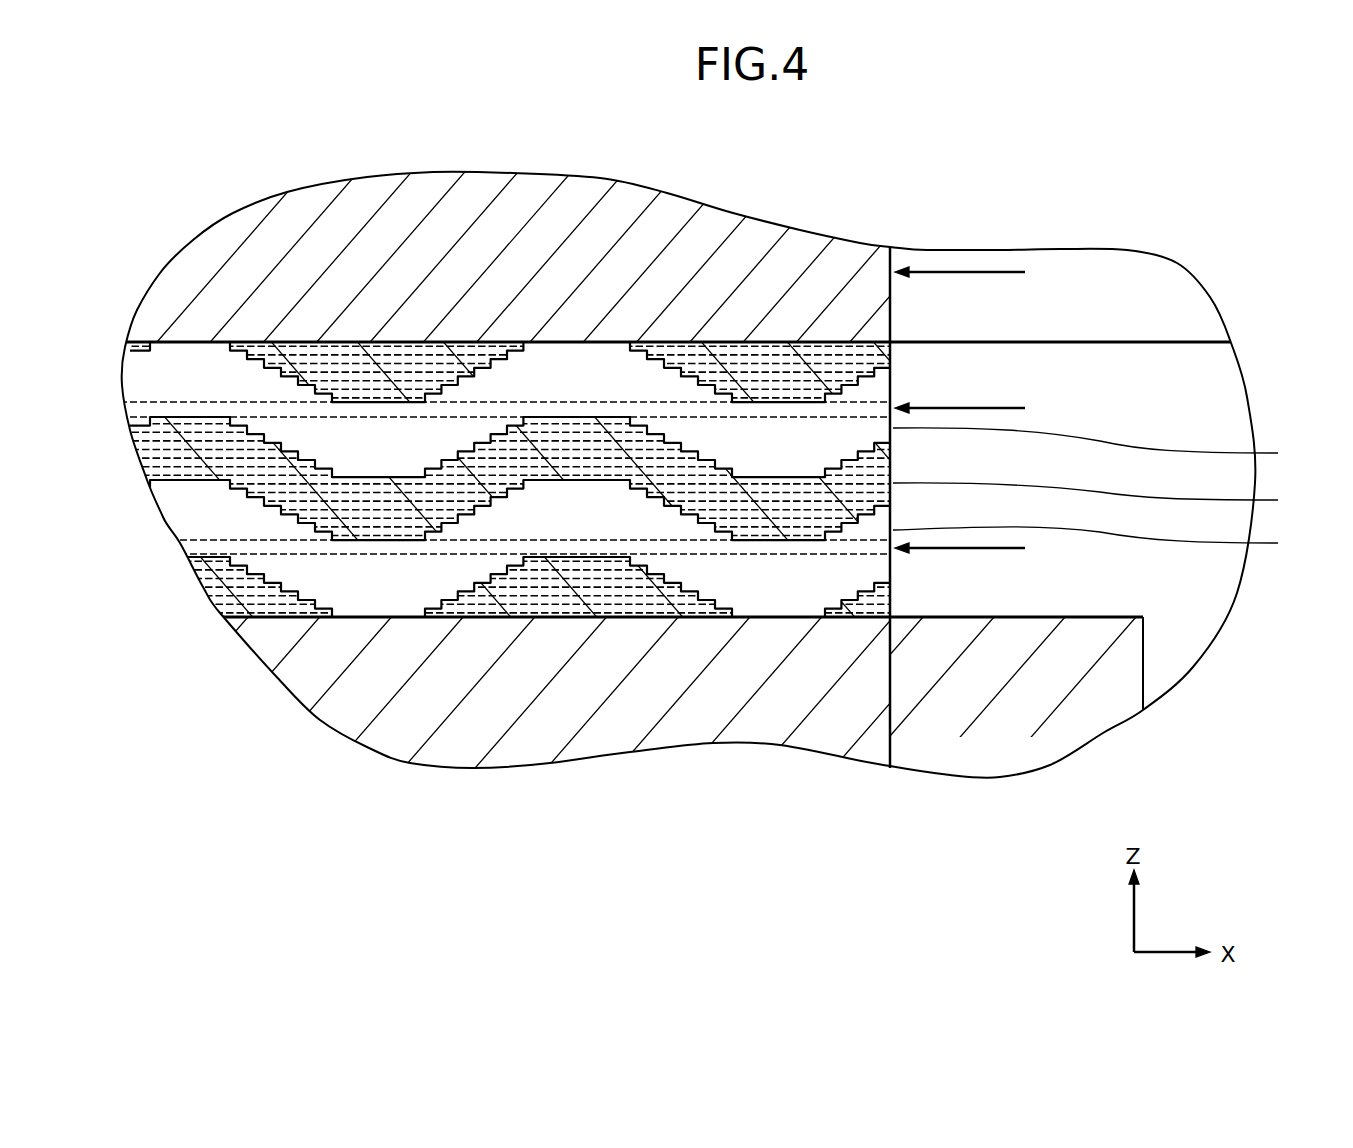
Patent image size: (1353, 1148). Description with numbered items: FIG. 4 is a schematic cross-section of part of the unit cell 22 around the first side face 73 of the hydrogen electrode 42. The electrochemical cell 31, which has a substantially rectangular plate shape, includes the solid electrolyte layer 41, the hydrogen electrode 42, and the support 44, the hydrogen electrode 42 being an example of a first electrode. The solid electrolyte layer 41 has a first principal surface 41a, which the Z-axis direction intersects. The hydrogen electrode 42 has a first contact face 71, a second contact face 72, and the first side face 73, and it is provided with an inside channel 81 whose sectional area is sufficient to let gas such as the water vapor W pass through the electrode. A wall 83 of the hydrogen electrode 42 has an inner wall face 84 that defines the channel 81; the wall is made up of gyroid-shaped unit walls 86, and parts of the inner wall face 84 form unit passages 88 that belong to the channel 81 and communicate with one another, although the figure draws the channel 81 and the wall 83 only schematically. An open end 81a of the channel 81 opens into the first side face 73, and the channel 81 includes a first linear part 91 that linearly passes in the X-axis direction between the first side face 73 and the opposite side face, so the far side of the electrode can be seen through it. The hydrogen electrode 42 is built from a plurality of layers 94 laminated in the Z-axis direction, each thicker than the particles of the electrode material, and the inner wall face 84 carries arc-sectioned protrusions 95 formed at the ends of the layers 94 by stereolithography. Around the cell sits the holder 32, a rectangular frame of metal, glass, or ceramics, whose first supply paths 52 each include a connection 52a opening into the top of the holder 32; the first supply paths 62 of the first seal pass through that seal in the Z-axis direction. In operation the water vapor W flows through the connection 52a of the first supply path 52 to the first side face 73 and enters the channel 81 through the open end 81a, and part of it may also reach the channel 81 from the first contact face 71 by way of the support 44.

The heat exchanger 22 is at (175, 125).
The electrochemical cell 31 is at (884, 241).
The holder 32 is at (1023, 752).
The solid electrolyte layer 41 is at (683, 732).
The first principal surface 41a is at (217, 610).
The hydrogen electrode 42 is at (777, 337).
The support 44 is at (663, 213).
The first supply path 52 is at (1193, 635).
The connection 52a is at (1092, 378).
The first supply path 62 is at (1183, 293).
The first contact face 71 is at (471, 342).
The second contact face 72 is at (517, 620).
The first side face 73 is at (1101, 497).
The channel 81 is at (590, 372).
The open end 81a is at (1106, 492).
The wall 83 is at (366, 498).
The inner wall face 84 is at (705, 453).
The unit wall 86 is at (192, 438).
The unit passage 88 is at (277, 540).
The first linear part 91 is at (133, 387).
The layer 94 is at (407, 350).
The protrusion 95 is at (520, 440).
The water vapor W is at (975, 272).